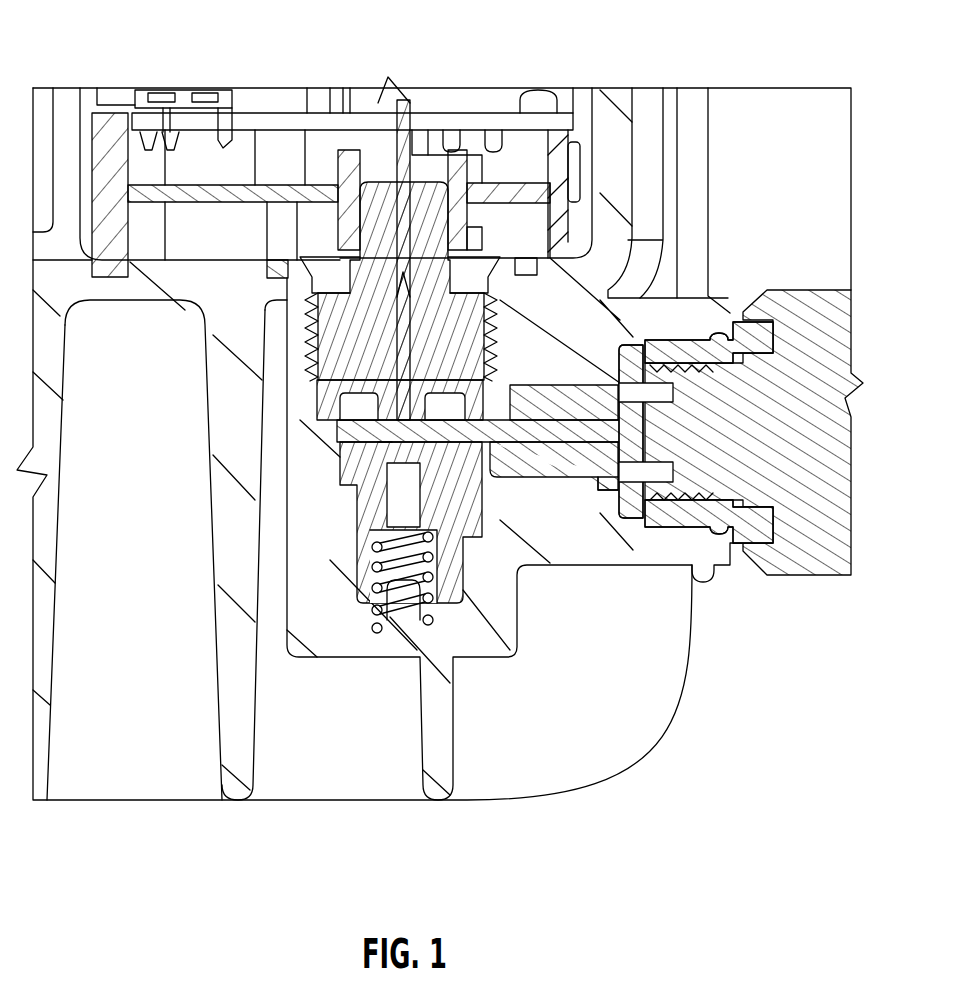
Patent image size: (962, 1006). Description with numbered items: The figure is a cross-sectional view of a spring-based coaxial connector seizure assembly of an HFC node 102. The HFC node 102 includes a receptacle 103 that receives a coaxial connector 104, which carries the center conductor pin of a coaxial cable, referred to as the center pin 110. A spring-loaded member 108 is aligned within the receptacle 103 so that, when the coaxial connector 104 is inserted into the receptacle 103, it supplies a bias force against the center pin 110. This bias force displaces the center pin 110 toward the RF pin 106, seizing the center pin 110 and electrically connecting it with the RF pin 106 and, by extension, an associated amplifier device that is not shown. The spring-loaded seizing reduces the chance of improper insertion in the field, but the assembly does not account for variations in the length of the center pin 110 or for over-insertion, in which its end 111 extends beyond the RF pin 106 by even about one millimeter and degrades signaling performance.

The HFC node 102 is at (633, 89).
The receptacle 103 is at (728, 308).
The coaxial connector 104 is at (823, 308).
The RF pin 106 is at (392, 338).
The spring-loaded member 108 is at (368, 570).
The center pin 110 is at (503, 445).
The end 111 is at (385, 447).